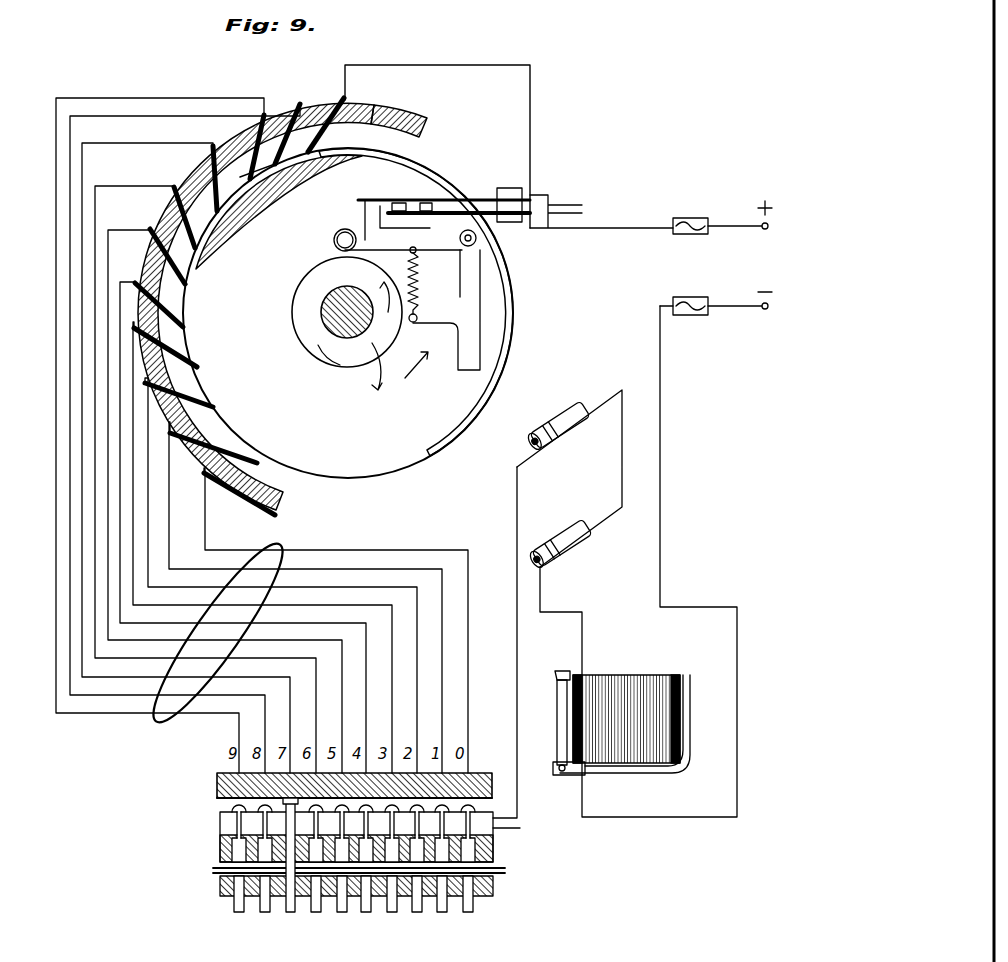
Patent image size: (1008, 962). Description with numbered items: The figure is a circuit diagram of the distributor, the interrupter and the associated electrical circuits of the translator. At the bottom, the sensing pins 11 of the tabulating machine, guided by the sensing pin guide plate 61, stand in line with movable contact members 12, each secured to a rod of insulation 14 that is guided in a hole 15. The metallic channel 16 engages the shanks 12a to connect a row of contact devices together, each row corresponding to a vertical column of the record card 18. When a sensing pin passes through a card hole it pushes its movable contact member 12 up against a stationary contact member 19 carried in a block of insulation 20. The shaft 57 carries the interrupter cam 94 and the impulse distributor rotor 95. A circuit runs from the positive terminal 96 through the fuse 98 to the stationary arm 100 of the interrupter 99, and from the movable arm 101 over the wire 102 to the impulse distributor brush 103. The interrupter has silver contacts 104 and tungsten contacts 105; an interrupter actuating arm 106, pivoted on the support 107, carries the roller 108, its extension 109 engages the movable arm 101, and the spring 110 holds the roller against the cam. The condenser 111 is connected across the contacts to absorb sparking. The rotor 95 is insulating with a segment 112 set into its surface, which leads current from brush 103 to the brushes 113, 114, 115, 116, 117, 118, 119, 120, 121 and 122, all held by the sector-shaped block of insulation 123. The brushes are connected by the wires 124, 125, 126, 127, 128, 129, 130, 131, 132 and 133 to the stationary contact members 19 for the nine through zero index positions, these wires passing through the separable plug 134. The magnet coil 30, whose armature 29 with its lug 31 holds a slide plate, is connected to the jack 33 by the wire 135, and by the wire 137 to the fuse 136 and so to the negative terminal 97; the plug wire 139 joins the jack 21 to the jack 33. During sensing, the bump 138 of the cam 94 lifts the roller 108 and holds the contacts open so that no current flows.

The sensing pin 11 is at (462, 905).
The movable contact member 12 is at (470, 812).
The shank 12a is at (521, 828).
The rod of insulation 14 is at (470, 857).
The hole 15 is at (220, 853).
The metallic channel 16 is at (232, 812).
The record card 18 is at (497, 874).
The stationary contact member 19 is at (217, 791).
The block of insulation 20 is at (485, 778).
The jack 21 is at (548, 416).
The armature 29 is at (557, 718).
The electromagnet 30 is at (645, 690).
The lug 31 is at (555, 674).
The jack 33 is at (560, 548).
The shaft 57 is at (335, 312).
The sensing pin guide plate 61 is at (220, 890).
The interrupter cam 94 is at (380, 358).
The impulse distributor rotor 95 is at (395, 175).
The positive terminal 96 is at (766, 225).
The negative terminal 97 is at (767, 311).
The fuse 98 is at (690, 218).
The interrupter 99 is at (432, 200).
The stationary arm 100 is at (490, 216).
The movable arm 101 is at (395, 185).
The wire 102 is at (530, 98).
The impulse distributor brush 103 is at (256, 306).
The contacts 104 is at (406, 217).
The contacts 105 is at (355, 100).
The interrupter actuating arm 106 is at (427, 241).
The support 107 is at (468, 297).
The roller 108 is at (334, 236).
The extension 109 is at (358, 205).
The spring 110 is at (418, 276).
The condenser 111 is at (575, 205).
The segment 112 is at (375, 150).
The brush 113 is at (300, 104).
The brush 114 is at (264, 115).
The brush 115 is at (213, 146).
The brush 116 is at (174, 187).
The brush 117 is at (150, 229).
The brush 118 is at (135, 283).
The brush 119 is at (134, 322).
The brush 120 is at (145, 383).
The brush 121 is at (170, 433).
The brush 122 is at (204, 473).
The sector-shaped block of insulation 123 is at (326, 113).
The wire 124 is at (56, 168).
The wire 125 is at (70, 220).
The wire 126 is at (82, 266).
The wire 127 is at (95, 344).
The wire 128 is at (108, 400).
The wire 129 is at (120, 450).
The wire 130 is at (133, 472).
The wire 131 is at (148, 505).
The wire 132 is at (169, 525).
The wire 133 is at (205, 545).
The separable plug 134 is at (265, 555).
The wire 135 is at (517, 500).
The fuse 136 is at (690, 298).
The wire 137 is at (660, 527).
The bump 138 is at (320, 360).
The plug wire 139 is at (727, 306).